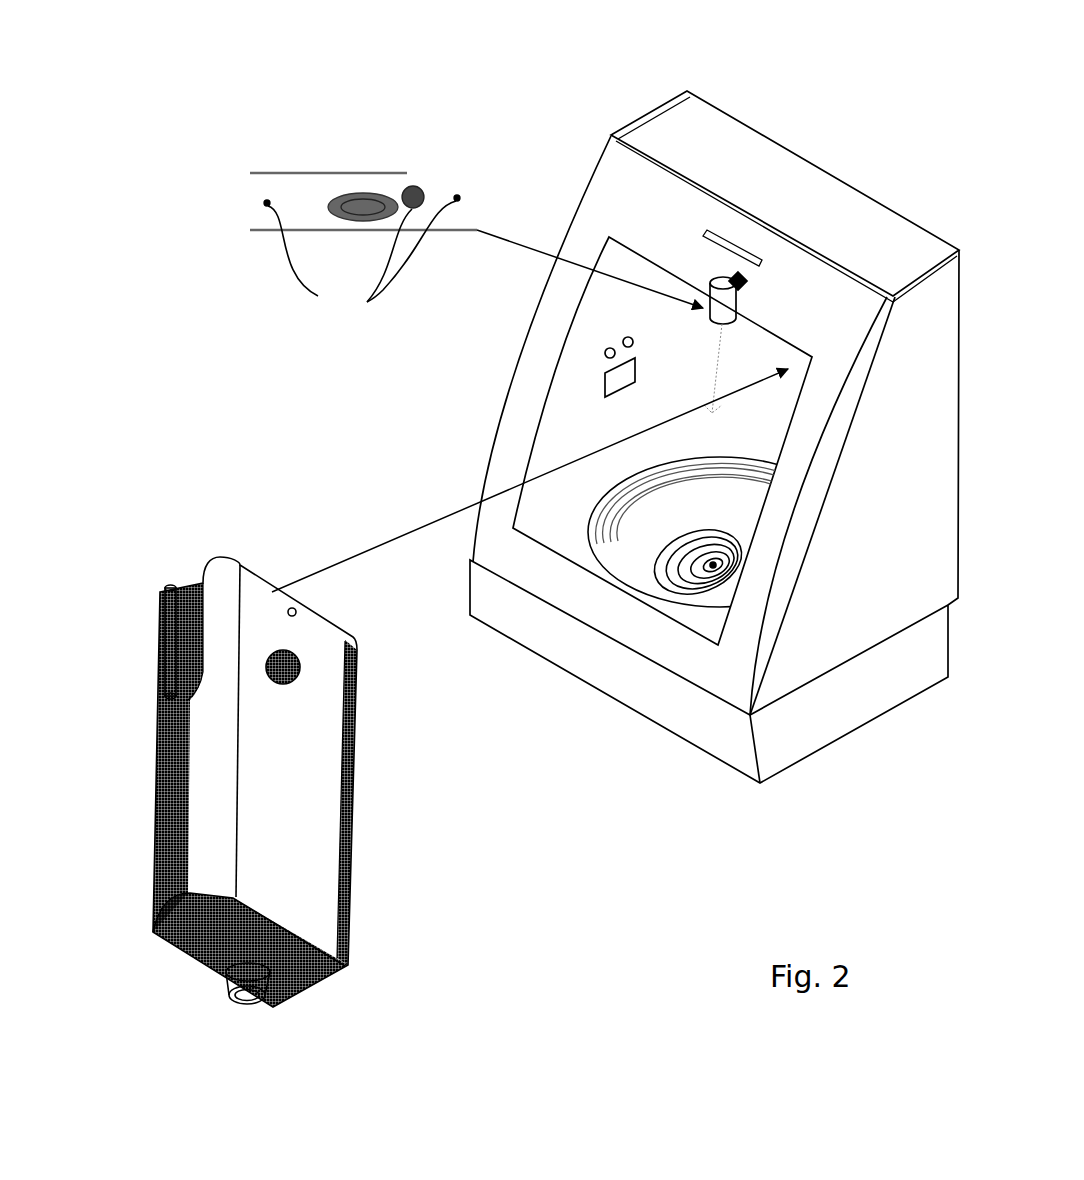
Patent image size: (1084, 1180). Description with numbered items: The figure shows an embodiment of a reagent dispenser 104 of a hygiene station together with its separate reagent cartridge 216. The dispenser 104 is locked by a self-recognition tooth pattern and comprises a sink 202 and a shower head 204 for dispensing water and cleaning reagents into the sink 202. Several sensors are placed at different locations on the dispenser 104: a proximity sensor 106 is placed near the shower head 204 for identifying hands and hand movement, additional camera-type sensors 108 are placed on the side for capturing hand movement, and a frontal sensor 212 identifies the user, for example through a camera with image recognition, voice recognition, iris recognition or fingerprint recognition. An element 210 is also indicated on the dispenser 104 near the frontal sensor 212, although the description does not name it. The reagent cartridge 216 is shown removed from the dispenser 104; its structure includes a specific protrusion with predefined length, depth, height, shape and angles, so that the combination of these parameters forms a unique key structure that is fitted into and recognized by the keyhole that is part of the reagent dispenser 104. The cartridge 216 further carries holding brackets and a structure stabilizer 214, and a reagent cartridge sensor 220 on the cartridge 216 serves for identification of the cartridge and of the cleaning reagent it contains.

The reagent dispenser 104 is at (866, 157).
The proximity sensor 106 is at (368, 302).
The camera-type sensors 108 is at (600, 352).
The sink 202 is at (638, 572).
The shower head 204 is at (375, 188).
The nozzle 210 is at (748, 255).
The frontal sensor 212 is at (741, 231).
The holding brackets and structure stabilizer 214 is at (196, 638).
The reagent cartridge 216 is at (322, 650).
The reagent cartridge sensor 220 is at (302, 673).